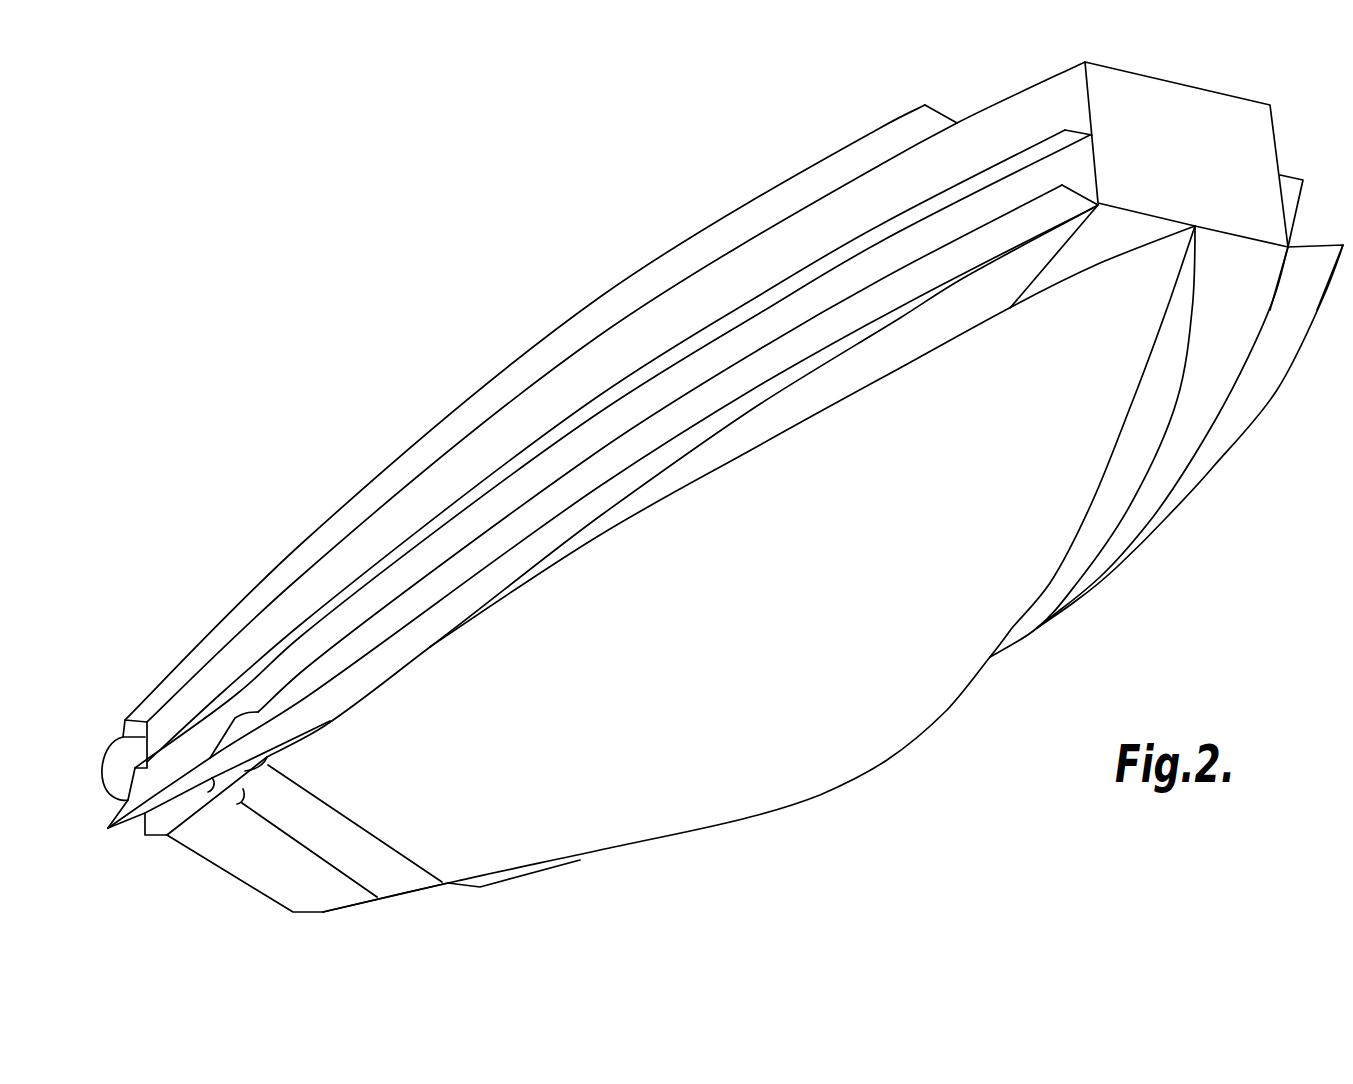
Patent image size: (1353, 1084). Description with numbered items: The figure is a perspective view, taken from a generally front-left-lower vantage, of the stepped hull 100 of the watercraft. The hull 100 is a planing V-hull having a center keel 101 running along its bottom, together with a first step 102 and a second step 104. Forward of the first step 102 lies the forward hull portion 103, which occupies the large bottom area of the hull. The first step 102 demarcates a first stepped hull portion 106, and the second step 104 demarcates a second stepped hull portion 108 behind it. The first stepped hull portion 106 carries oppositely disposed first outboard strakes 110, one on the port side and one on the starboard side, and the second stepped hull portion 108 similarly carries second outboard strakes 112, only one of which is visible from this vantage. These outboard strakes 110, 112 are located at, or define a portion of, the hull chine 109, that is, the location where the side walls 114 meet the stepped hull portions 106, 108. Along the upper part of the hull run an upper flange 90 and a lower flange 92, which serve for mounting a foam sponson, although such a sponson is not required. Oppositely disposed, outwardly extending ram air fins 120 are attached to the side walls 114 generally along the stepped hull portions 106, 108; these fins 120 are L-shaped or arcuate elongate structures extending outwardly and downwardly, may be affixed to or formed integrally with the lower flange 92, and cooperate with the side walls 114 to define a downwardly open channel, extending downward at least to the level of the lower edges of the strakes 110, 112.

The upper flange 90 is at (927, 118).
The lower flange 92 is at (1033, 212).
The stepped hull 100 is at (668, 858).
The center keel 101 is at (947, 711).
The first step 102 is at (463, 887).
The forward hull portion 103 is at (775, 657).
The second step 104 is at (336, 873).
The first stepped hull portion 106 is at (373, 860).
The second stepped hull portion 108 is at (273, 877).
The hull chine 109 is at (322, 734).
The first outboard strakes 110 is at (178, 823).
The second outboard strakes 112 is at (168, 838).
The side walls 114 is at (847, 198).
The ram air fins 120 is at (123, 800).